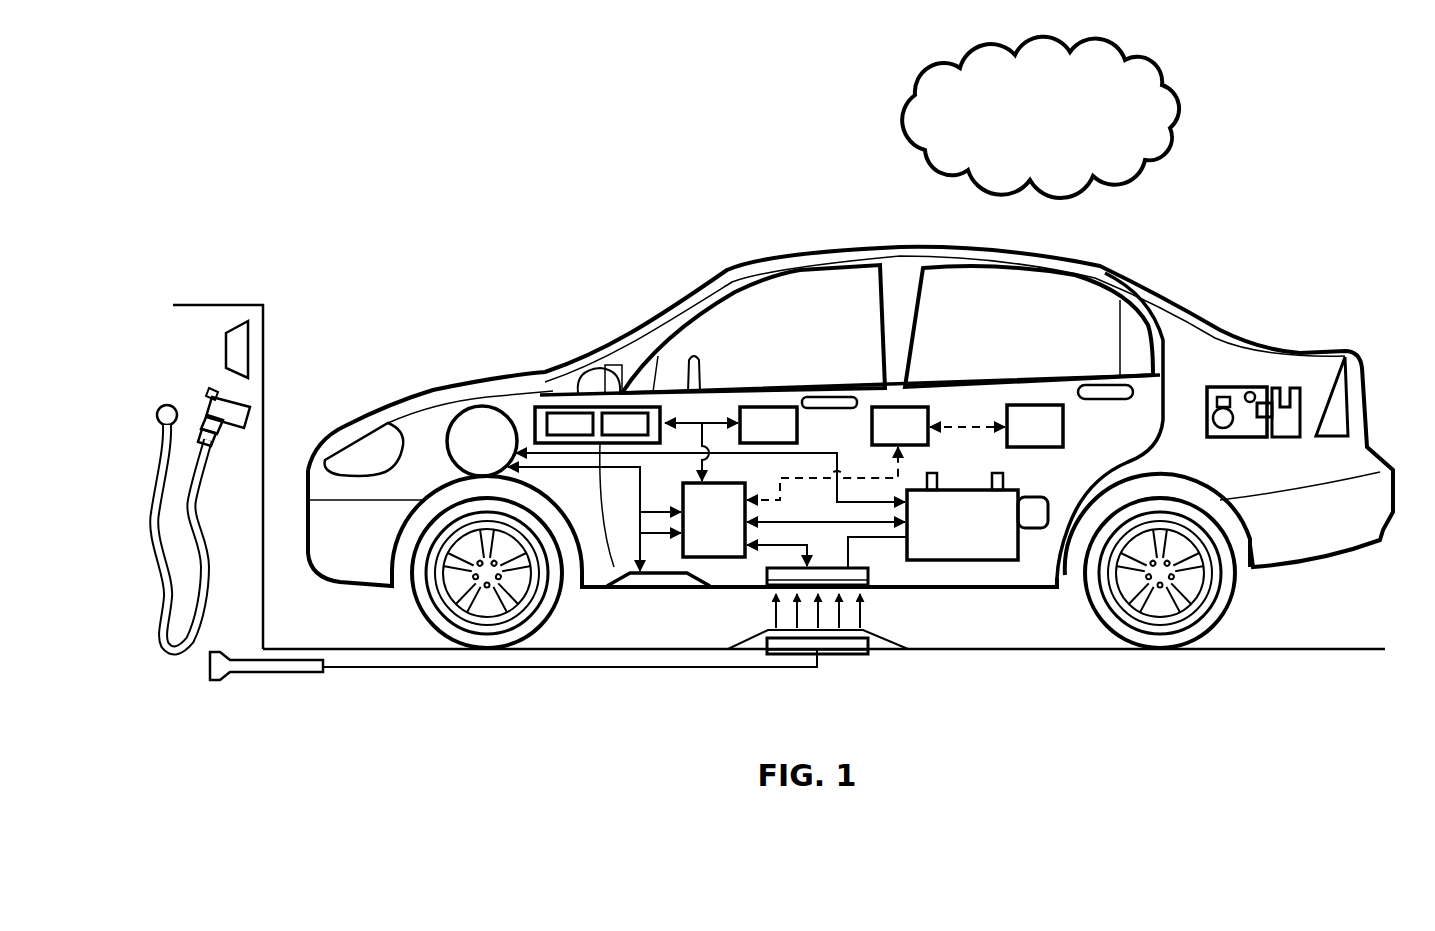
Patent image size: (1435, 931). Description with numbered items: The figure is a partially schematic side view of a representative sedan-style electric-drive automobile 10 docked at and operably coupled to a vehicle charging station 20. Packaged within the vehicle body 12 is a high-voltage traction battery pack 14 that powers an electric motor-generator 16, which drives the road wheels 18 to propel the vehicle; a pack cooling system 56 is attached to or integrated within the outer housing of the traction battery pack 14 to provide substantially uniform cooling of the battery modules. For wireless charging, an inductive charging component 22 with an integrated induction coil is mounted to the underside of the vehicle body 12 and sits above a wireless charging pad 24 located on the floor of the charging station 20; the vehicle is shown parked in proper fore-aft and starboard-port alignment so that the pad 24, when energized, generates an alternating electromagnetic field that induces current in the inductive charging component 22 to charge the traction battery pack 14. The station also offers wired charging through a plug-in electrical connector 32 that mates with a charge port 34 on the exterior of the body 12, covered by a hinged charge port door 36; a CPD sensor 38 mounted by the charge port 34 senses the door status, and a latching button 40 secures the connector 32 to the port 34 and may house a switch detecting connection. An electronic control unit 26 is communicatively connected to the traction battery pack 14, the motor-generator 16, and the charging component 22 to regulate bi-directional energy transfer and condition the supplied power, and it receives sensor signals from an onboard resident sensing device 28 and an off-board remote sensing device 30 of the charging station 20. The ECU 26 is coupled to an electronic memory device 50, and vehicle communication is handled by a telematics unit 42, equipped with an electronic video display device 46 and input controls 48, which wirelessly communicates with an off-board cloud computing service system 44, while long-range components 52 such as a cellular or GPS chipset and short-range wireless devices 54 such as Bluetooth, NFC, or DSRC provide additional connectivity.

The automobile 10 is at (465, 192).
The vehicle body 12 is at (686, 222).
The traction battery pack 14 is at (1000, 563).
The electric motor-generator 16 is at (460, 410).
The road wheel 18 is at (492, 650).
The vehicle charging station 20 is at (288, 294).
The inductive charging component 22 is at (763, 578).
The wireless charging pad 24 is at (838, 656).
The electronic control unit 26 is at (714, 520).
The resident sensing device 28 is at (630, 590).
The remote sensing device 30 is at (243, 330).
The electrical connector 32 is at (205, 413).
The charge port 34 is at (1220, 390).
The charge port door 36 is at (1288, 388).
The CPD sensor 38 is at (1246, 388).
The latching button 40 is at (209, 388).
The telematics unit 42 is at (537, 405).
The cloud computing service system 44 is at (1040, 117).
The electronic video display device 46 is at (552, 412).
The input controls 48 is at (618, 412).
The electronic memory device 50 is at (757, 407).
The long-range communication component 52 is at (905, 402).
The short-range wireless communication device 54 is at (1035, 405).
The pack cooling system 56 is at (1038, 532).